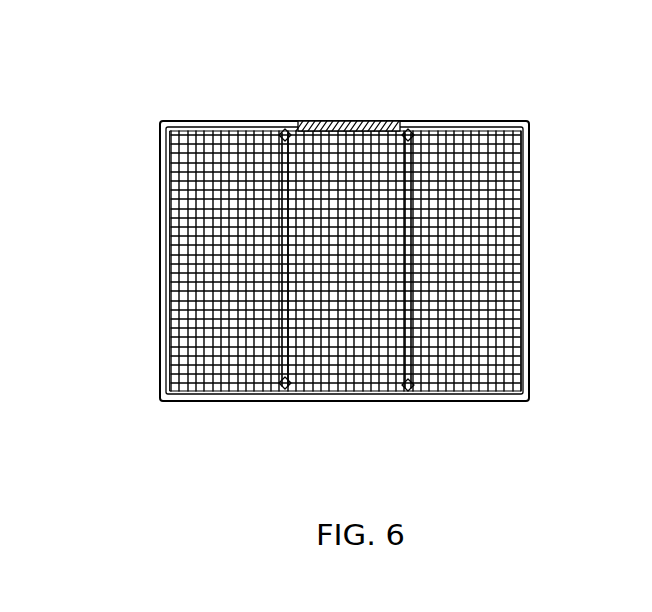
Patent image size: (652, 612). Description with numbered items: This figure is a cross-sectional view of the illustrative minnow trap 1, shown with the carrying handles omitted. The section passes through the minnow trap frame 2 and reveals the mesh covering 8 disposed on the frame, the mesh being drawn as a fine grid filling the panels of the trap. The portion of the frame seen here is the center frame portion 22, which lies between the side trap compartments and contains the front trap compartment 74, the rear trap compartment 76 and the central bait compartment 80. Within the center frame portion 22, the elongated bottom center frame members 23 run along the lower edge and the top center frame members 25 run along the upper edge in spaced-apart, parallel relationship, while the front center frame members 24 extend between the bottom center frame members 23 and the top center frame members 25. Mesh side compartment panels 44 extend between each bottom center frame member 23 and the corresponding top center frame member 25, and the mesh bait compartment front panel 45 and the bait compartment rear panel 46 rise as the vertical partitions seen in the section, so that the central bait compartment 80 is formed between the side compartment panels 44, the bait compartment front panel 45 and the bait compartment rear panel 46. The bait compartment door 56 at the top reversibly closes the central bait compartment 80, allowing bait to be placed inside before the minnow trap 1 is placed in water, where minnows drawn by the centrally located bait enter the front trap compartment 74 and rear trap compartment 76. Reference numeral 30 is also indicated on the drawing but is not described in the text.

The minnow trap 1 is at (110, 106).
The minnow trap frame 2 is at (237, 400).
The mesh covering 8 is at (153, 323).
The center frame portion 22 is at (181, 111).
The bottom center frame members 23 is at (348, 396).
The front center frame members 24 is at (525, 205).
The top center frame members 25 is at (286, 112).
The vertical bar 30 is at (268, 245).
The mesh side compartment panels 44 is at (270, 168).
The mesh bait compartment front panel 45 is at (265, 270).
The bait compartment rear panel 46 is at (410, 312).
The bait compartment door 56 is at (332, 113).
The front trap compartment 74 is at (497, 378).
The rear trap compartment 76 is at (184, 377).
The central bait compartment 80 is at (372, 376).